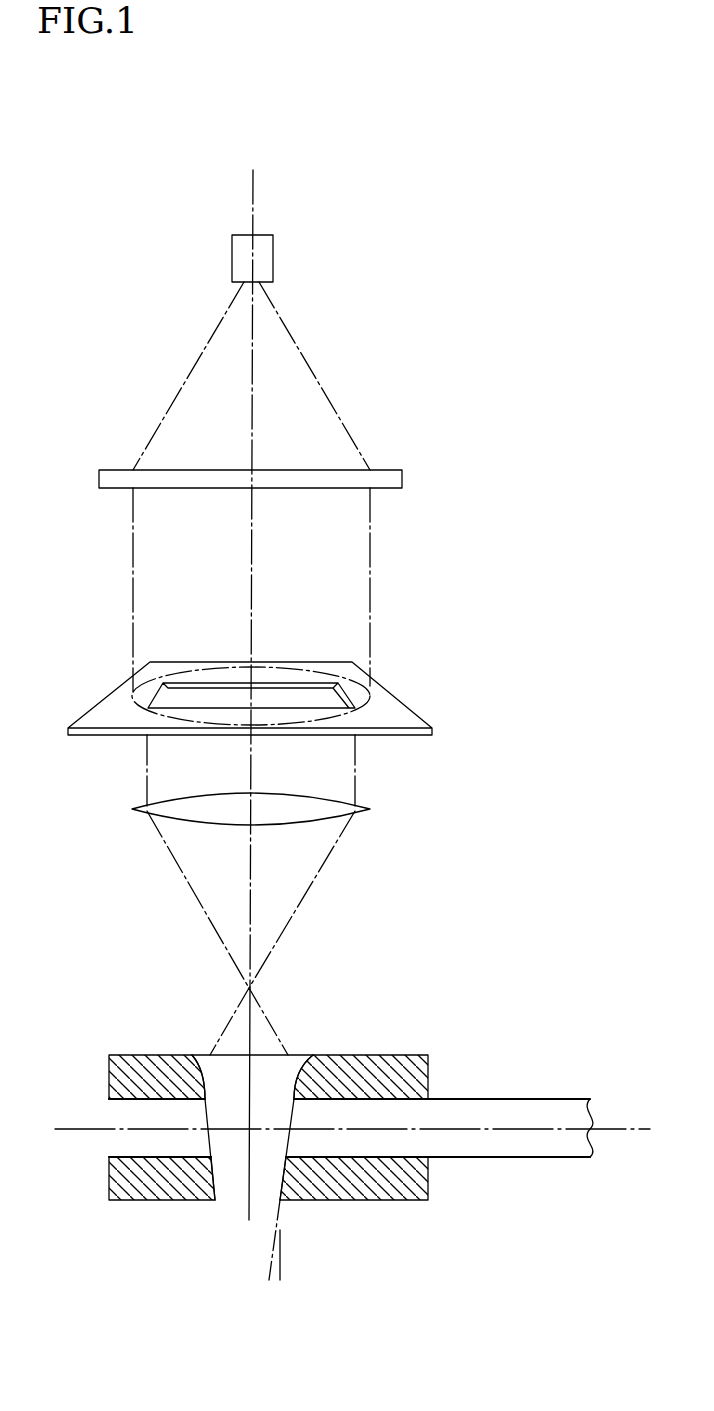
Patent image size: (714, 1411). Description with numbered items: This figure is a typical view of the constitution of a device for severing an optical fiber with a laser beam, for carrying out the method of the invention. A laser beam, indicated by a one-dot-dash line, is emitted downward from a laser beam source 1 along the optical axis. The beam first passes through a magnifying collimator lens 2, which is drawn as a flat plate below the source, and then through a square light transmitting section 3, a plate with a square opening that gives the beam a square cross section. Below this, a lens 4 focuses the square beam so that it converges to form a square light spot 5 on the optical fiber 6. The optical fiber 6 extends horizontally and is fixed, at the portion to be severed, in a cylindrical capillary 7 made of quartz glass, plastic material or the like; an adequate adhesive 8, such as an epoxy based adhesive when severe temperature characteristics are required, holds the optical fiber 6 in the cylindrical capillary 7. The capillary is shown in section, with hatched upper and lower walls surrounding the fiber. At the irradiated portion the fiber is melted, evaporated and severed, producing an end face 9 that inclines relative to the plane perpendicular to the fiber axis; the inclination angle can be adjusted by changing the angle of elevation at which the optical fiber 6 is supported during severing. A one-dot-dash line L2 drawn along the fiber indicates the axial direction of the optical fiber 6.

The laser beam source 1 is at (263, 261).
The magnifying collimator lens 2 is at (330, 480).
The square light transmitting section 3 is at (328, 700).
The lens 4 is at (312, 811).
The square light spot 5 is at (263, 1053).
The optical fiber 6 is at (469, 1140).
The cylindrical capillary 7 is at (382, 1183).
The adhesive 8 is at (380, 1097).
The end face 9 is at (290, 1130).
The axial direction of the optical fiber L2 is at (545, 1130).